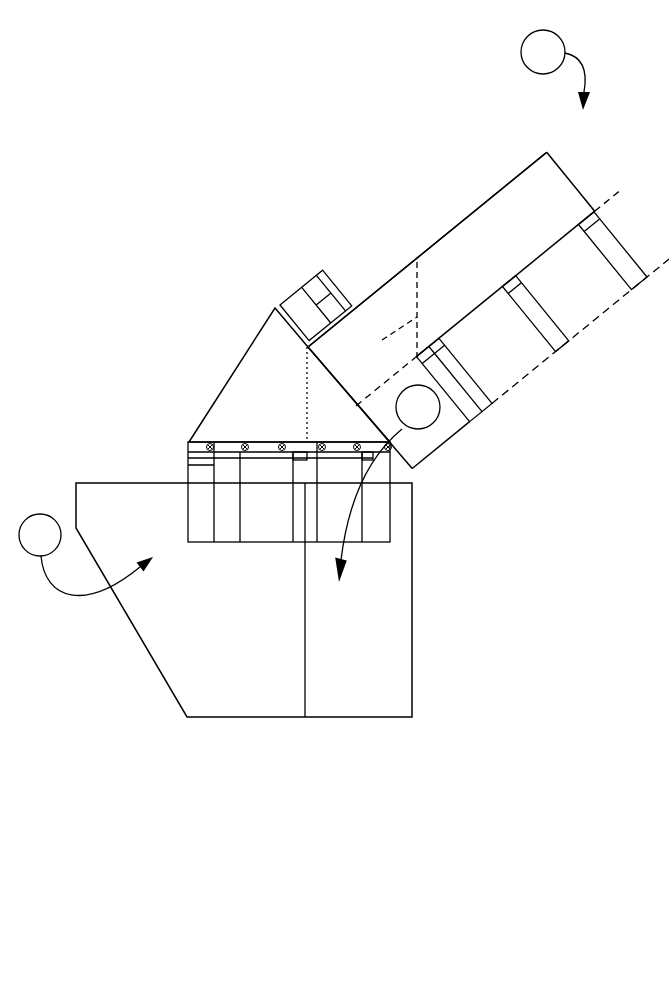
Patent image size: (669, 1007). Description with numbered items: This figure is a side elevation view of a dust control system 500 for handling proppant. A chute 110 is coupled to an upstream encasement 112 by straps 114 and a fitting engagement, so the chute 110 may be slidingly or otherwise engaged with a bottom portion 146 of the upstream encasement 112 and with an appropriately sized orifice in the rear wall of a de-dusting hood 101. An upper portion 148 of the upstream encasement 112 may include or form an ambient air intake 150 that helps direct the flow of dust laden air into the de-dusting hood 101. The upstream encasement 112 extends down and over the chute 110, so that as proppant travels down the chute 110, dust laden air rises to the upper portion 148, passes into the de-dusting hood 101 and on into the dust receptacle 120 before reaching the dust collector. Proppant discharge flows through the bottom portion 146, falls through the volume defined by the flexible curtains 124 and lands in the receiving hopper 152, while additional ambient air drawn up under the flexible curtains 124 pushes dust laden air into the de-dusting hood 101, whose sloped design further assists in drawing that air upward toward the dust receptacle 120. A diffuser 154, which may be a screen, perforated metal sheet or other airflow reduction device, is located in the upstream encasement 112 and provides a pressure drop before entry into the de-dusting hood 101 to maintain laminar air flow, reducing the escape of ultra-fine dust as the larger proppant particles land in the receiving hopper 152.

The dust control system 500 is at (138, 279).
The de-dusting hood 101 is at (223, 390).
The dust receptacle 120 is at (293, 296).
The upstream encasement 112 is at (371, 310).
The upper portion 148 is at (435, 267).
The ambient air intake 150 is at (558, 170).
The diffuser 154 is at (385, 311).
The bottom portion 146 is at (423, 442).
The chute 110 is at (512, 384).
The straps 114 is at (600, 230).
The flexible curtains 124 is at (382, 497).
The receiving hopper 152 is at (145, 625).